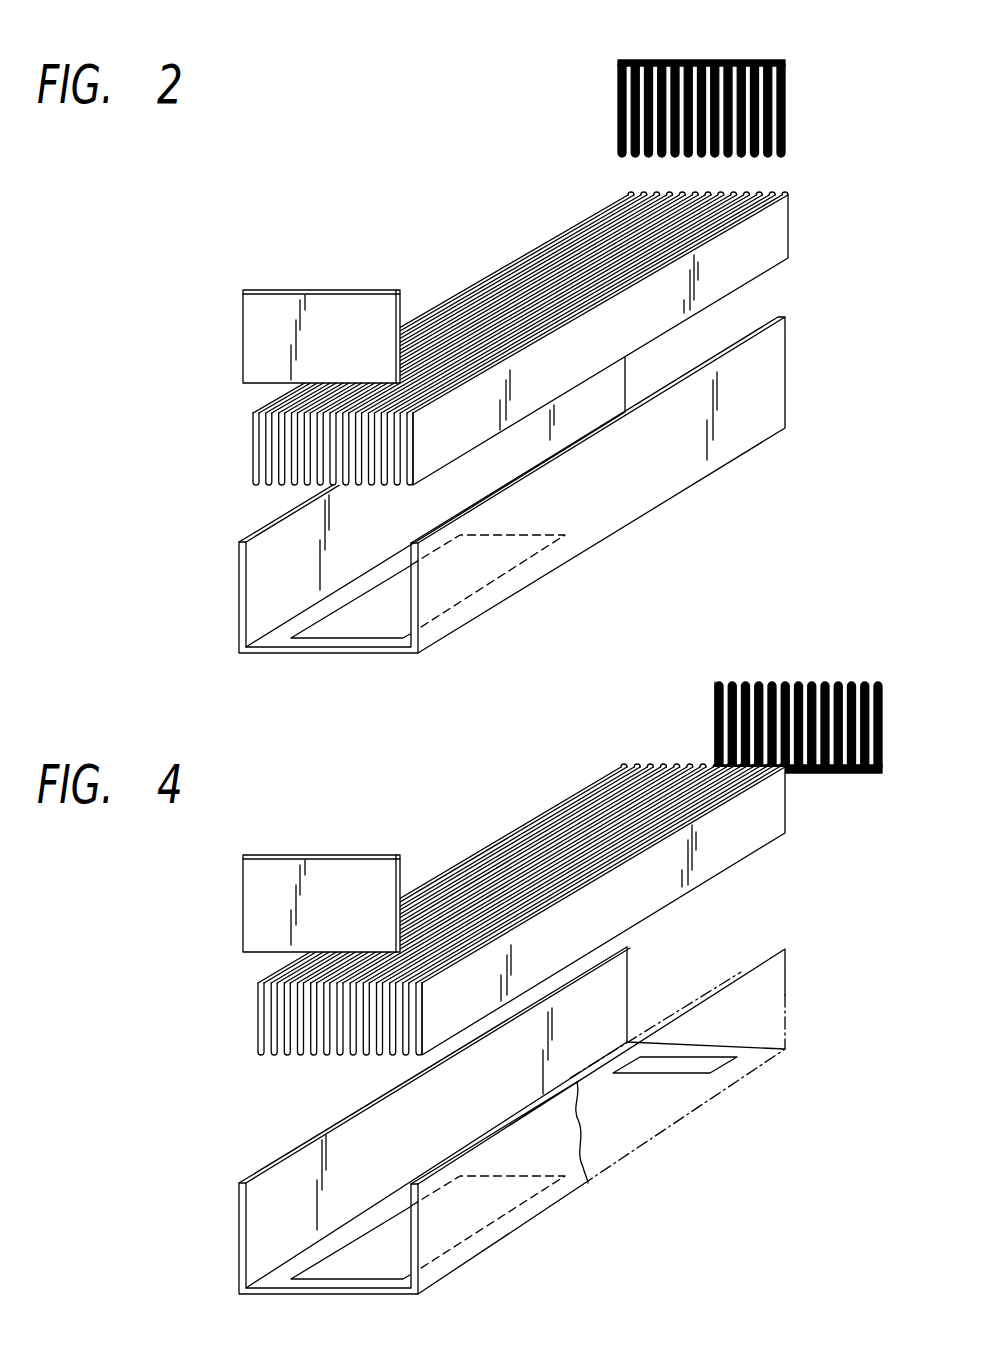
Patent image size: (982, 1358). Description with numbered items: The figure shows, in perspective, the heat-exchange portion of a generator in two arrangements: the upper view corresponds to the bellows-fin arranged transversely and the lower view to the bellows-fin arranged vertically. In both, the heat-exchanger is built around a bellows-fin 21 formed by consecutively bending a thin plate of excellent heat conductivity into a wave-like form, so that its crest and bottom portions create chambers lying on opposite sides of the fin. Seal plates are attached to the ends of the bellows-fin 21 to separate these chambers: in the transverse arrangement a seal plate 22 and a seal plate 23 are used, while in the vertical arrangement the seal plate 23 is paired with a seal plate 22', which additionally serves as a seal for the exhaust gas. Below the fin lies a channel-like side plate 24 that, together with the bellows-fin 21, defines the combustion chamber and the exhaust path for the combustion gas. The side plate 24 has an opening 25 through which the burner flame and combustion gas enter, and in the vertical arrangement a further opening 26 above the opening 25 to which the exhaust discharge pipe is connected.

In FIG. 2, the bellows-fin 21 is at (775, 250).
In FIG. 4, the bellows-fin 21 is at (747, 848).
In FIG. 2, the seal plate 22 is at (701, 82).
In FIG. 4, the seal plate 22' is at (798, 699).
In FIG. 2, the seal plate 23 is at (344, 305).
In FIG. 4, the seal plate 23 is at (347, 866).
In FIG. 2, the side plate 24 is at (643, 500).
In FIG. 4, the side plate 24 is at (541, 1210).
In FIG. 2, the opening 25 is at (374, 625).
In FIG. 4, the opening 25 is at (353, 1269).
In FIG. 4, the opening 26 is at (707, 1067).